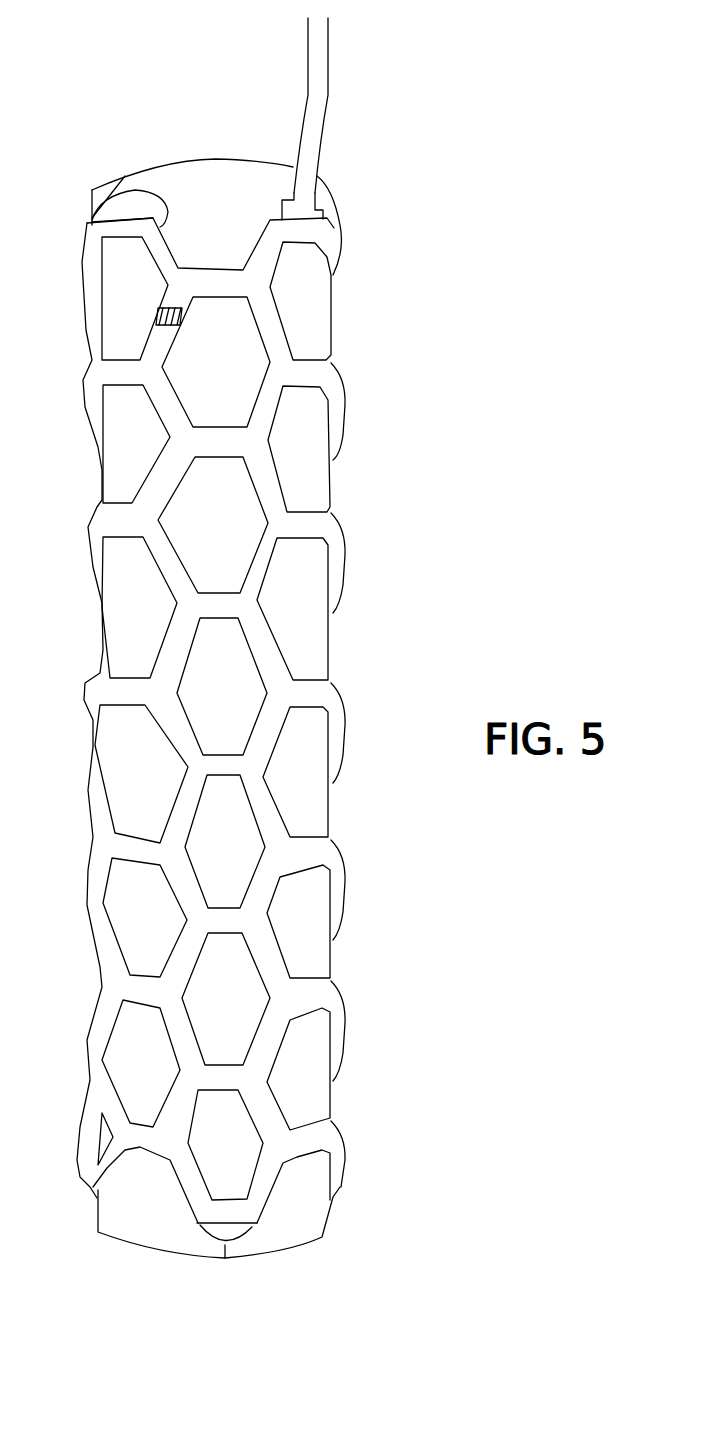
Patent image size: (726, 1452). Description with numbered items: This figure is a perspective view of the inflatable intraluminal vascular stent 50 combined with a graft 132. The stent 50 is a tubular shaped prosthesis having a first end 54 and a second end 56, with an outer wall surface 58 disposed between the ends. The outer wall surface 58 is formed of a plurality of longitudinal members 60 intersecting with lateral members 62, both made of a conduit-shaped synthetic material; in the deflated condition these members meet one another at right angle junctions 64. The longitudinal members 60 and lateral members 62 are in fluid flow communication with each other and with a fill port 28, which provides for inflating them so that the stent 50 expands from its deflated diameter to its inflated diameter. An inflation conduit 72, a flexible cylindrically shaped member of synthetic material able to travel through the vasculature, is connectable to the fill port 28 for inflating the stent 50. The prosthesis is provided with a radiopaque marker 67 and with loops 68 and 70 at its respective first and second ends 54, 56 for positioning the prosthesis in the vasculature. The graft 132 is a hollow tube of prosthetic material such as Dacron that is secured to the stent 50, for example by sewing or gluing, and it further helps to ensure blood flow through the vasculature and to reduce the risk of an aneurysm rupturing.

The inflatable intraluminal vascular stent 50 is at (209, 76).
The second end 56 is at (170, 158).
The loop 70 is at (127, 198).
The inflation conduit 72 is at (332, 57).
The fill port 28 is at (318, 222).
The outer wall surface 58 is at (279, 730).
The graft 132 is at (313, 321).
The longitudinal members 60 is at (260, 567).
The right angle junctions 64 is at (250, 604).
The lateral members 62 is at (217, 606).
The radiopaque marker 67 is at (150, 320).
The loop 68 is at (225, 1258).
The first end 54 is at (289, 1255).